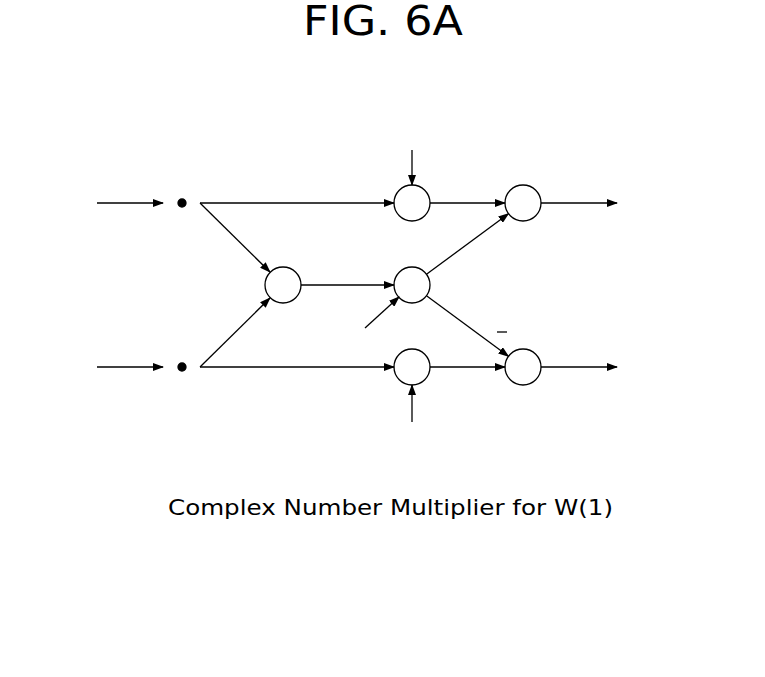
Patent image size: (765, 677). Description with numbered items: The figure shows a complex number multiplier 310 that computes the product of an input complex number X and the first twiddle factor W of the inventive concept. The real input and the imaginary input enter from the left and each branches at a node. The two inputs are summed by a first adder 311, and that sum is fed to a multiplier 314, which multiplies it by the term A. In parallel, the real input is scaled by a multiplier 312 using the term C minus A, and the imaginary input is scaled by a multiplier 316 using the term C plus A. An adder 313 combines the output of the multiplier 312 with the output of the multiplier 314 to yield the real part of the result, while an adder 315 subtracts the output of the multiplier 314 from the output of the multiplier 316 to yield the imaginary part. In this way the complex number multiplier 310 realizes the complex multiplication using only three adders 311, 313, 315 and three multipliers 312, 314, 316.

The complex number multiplier 310 is at (617, 108).
The adder 311 is at (288, 268).
The multiplier 312 is at (425, 189).
The adder 313 is at (530, 186).
The multiplier 314 is at (430, 289).
The adder 315 is at (528, 350).
The multiplier 316 is at (425, 381).